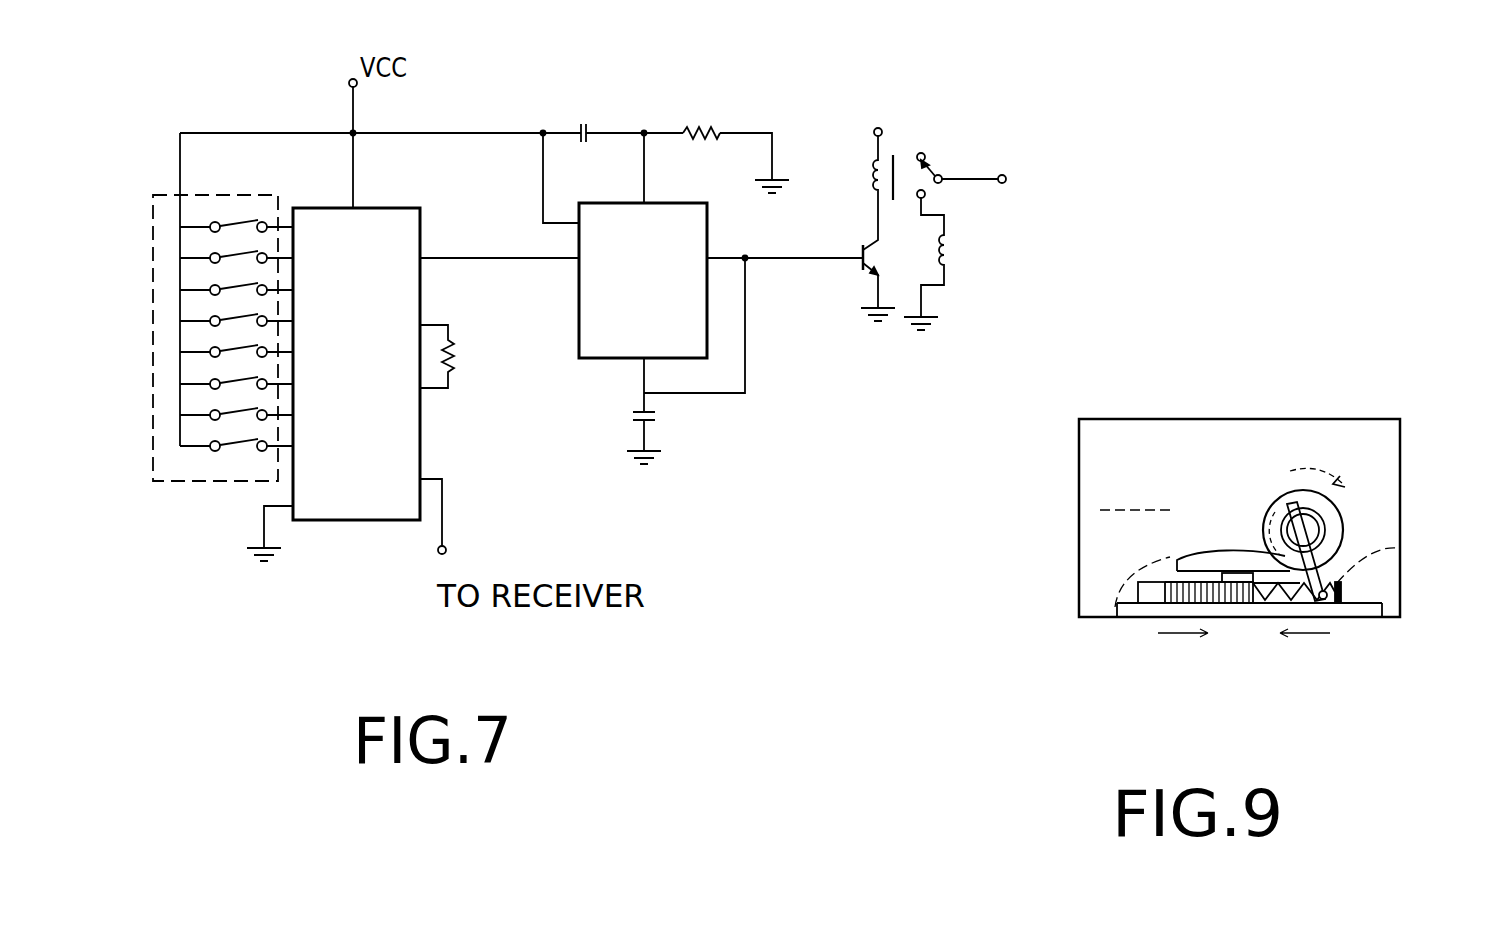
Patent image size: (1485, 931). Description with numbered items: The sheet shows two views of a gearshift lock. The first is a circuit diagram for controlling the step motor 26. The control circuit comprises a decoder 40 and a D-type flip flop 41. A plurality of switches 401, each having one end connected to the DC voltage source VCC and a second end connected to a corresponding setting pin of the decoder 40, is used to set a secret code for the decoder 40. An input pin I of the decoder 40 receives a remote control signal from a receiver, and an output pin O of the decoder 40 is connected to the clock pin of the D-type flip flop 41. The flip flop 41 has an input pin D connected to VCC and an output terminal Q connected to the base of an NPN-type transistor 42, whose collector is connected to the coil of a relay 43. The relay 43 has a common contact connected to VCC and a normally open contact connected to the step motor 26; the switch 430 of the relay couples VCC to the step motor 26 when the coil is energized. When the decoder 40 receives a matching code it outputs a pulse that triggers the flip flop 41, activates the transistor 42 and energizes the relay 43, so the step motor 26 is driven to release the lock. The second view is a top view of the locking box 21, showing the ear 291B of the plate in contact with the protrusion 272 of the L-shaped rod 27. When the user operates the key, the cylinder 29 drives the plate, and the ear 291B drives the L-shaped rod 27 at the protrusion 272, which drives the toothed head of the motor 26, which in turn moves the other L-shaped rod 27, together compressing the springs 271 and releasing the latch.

In FIG. 7, the decoder 40 is at (387, 505).
In FIG. 7, the switches 401 is at (200, 481).
In FIG. 7, the D-type flip flop 41 is at (583, 313).
In FIG. 7, the NPN-type transistor 42 is at (888, 256).
In FIG. 7, the relay 43 is at (863, 147).
In FIG. 7, the relay switch 430 is at (988, 159).
In FIG. 7, the step motor 26 is at (948, 264).
In FIG. 9, the step motor 26 is at (1240, 601).
In FIG. 9, the casing 21 is at (1238, 428).
In FIG. 9, the cylinder 29 is at (1333, 510).
In FIG. 9, the ear 291B is at (1323, 577).
In FIG. 9, the L-shaped rod 27 is at (1150, 601).
In FIG. 9, the springs 271 is at (1277, 601).
In FIG. 9, the protrusion 272 is at (1327, 601).